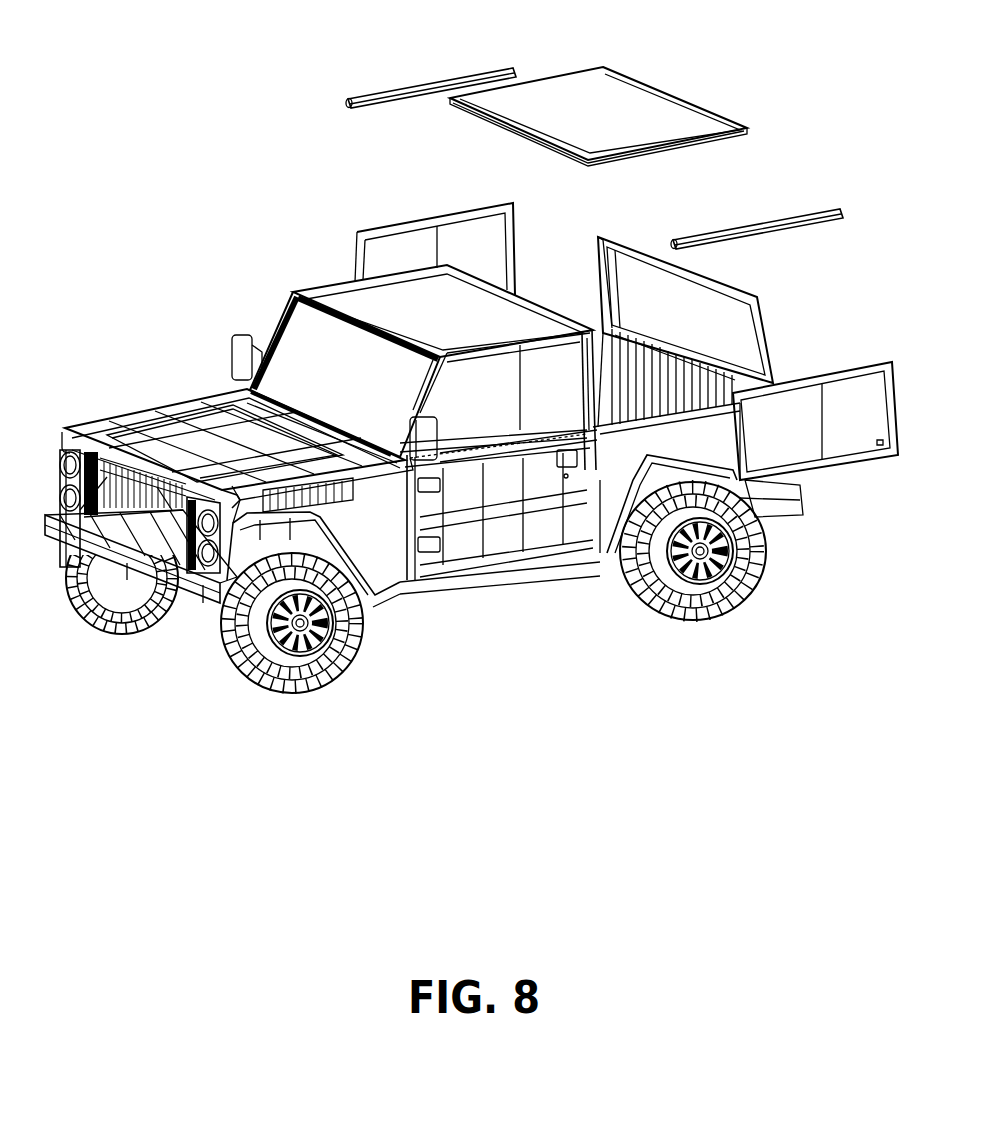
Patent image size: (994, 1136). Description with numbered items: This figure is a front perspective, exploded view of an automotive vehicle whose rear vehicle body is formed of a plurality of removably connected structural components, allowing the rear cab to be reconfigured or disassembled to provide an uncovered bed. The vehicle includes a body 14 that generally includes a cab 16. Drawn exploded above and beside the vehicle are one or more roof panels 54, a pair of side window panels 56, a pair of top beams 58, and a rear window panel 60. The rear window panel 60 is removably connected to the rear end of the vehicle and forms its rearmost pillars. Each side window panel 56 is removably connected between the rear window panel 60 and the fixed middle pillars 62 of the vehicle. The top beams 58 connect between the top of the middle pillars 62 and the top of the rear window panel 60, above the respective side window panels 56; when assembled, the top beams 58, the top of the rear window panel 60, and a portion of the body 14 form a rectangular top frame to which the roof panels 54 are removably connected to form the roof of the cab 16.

The body 14 is at (610, 510).
The cab 16 is at (352, 305).
The roof panels 54 is at (680, 113).
The side window panels 56 is at (393, 247).
The top beams 58 is at (390, 90).
The rear window panel 60 is at (767, 317).
The middle pillars 62 is at (593, 393).